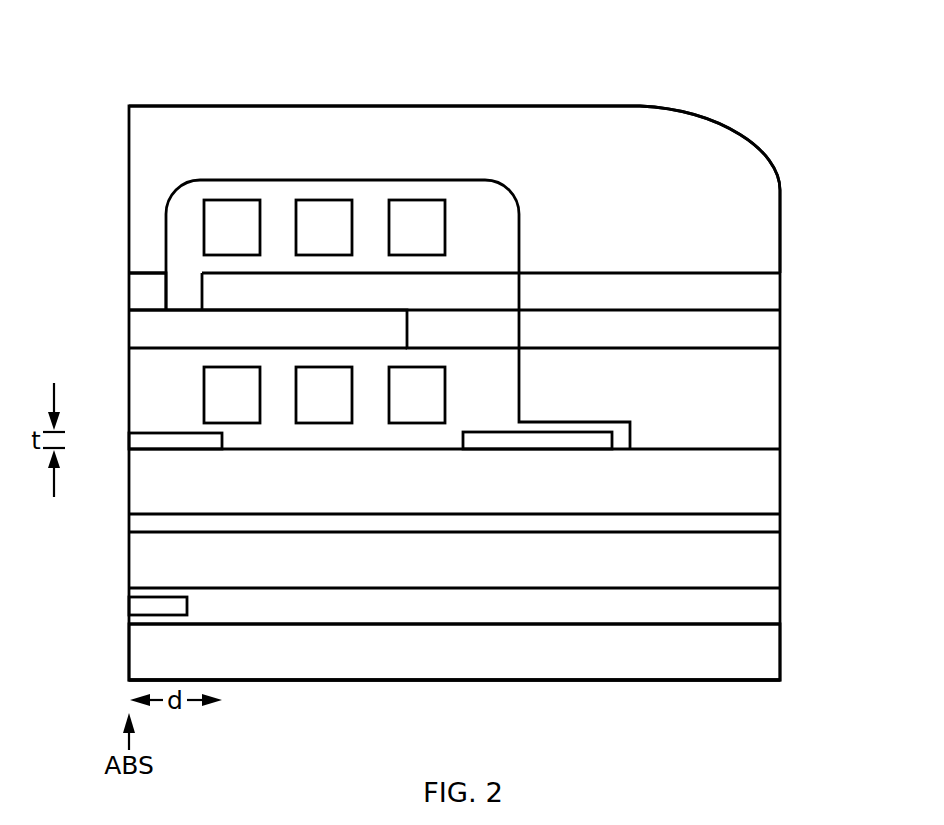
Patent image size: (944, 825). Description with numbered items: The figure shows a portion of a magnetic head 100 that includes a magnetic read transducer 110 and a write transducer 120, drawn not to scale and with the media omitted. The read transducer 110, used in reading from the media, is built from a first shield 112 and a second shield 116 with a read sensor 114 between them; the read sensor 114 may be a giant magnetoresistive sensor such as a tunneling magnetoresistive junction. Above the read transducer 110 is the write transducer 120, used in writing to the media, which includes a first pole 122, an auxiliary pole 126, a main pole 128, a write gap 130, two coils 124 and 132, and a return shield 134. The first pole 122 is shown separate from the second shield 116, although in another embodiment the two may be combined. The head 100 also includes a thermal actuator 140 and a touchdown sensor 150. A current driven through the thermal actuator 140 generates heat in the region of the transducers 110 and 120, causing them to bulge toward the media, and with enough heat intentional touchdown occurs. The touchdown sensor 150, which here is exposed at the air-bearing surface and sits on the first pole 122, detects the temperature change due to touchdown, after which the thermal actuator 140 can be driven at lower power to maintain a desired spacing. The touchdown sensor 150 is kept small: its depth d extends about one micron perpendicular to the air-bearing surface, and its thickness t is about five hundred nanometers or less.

The magnetic head 100 is at (479, 349).
The magnetic read transducer 110 is at (479, 606).
The shield 112 is at (479, 633).
The read sensor 114 is at (129, 607).
The second shield 116 is at (129, 552).
The write transducer 120 is at (488, 296).
The first pole 122 is at (129, 477).
The coil 124 is at (485, 380).
The auxiliary pole 126 is at (710, 273).
The main pole 128 is at (129, 330).
The write gap 130 is at (149, 273).
The coil 132 is at (486, 230).
The return shield 134 is at (129, 200).
The thermal actuator 140 is at (612, 437).
The touchdown sensor 150 is at (129, 440).